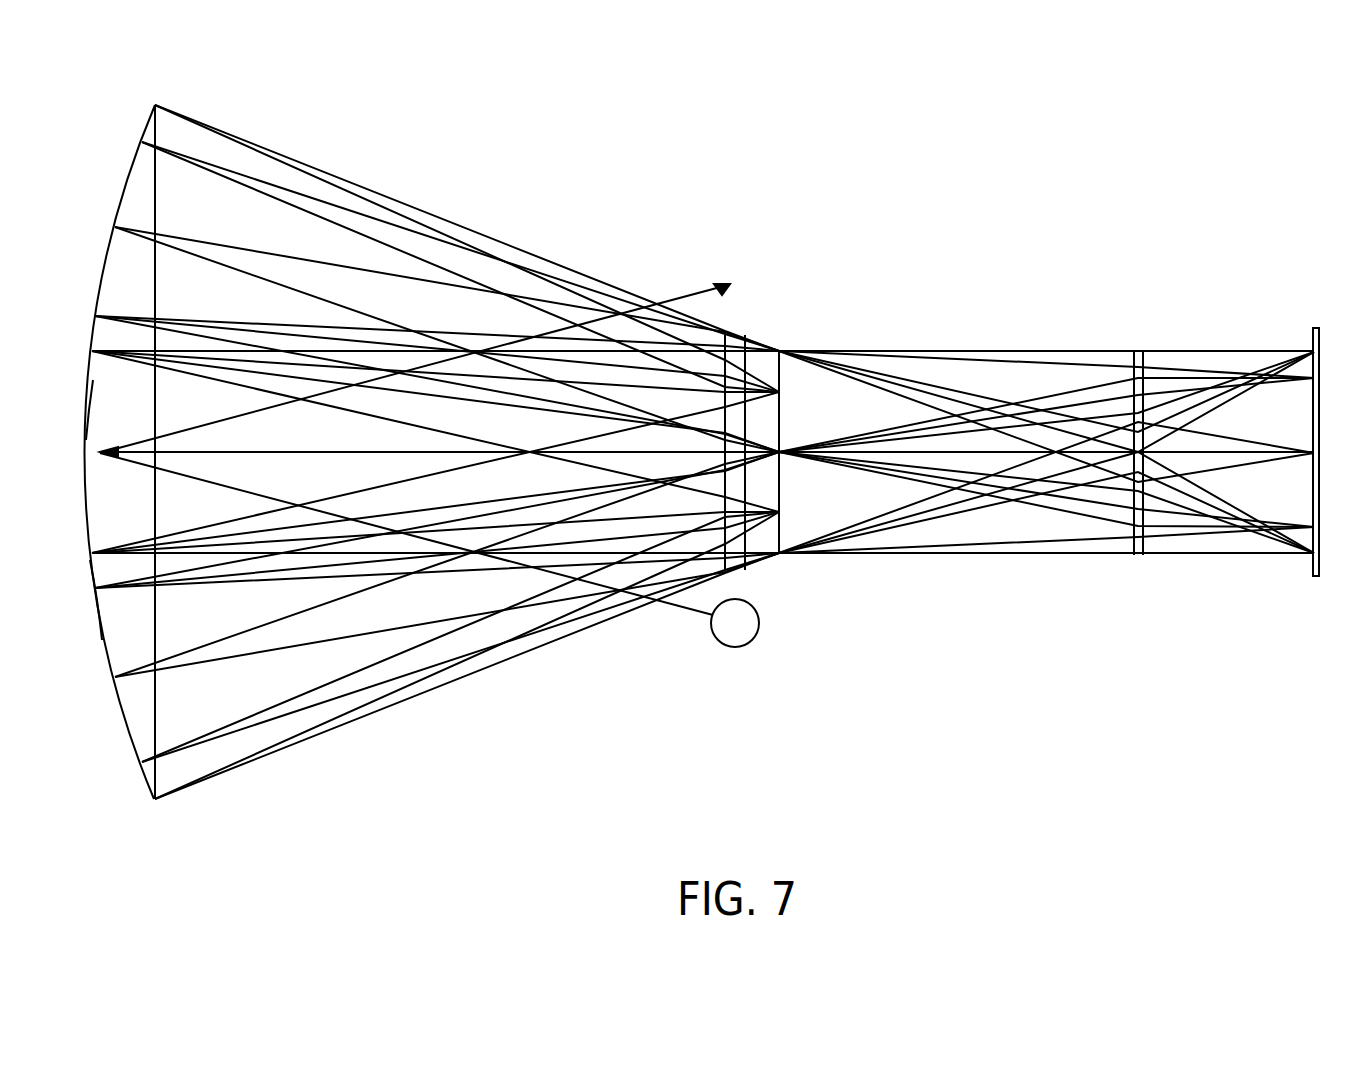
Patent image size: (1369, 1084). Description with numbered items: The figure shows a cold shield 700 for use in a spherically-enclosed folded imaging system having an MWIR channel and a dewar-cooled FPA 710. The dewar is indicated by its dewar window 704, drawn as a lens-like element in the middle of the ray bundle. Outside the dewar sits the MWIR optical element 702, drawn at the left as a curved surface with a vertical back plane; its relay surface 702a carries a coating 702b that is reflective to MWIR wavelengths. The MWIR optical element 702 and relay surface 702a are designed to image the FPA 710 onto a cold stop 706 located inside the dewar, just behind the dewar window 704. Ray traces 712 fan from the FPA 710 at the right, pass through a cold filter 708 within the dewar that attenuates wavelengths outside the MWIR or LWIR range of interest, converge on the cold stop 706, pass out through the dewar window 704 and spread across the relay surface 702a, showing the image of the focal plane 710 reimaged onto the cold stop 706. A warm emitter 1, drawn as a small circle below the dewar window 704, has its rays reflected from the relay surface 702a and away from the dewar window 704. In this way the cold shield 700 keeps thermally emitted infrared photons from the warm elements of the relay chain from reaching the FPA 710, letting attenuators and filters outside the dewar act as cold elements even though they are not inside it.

The cold shield 700 is at (784, 787).
The MWIR optical element 702 is at (157, 192).
The relay surface 702a is at (112, 653).
The coating 702b is at (85, 414).
The dewar window 704 is at (738, 333).
The cold stop 706 is at (781, 400).
The cold filter 708 is at (1140, 558).
The FPA 710 is at (1317, 327).
The light rays 712 is at (495, 241).
The warm emitter 1 is at (750, 647).